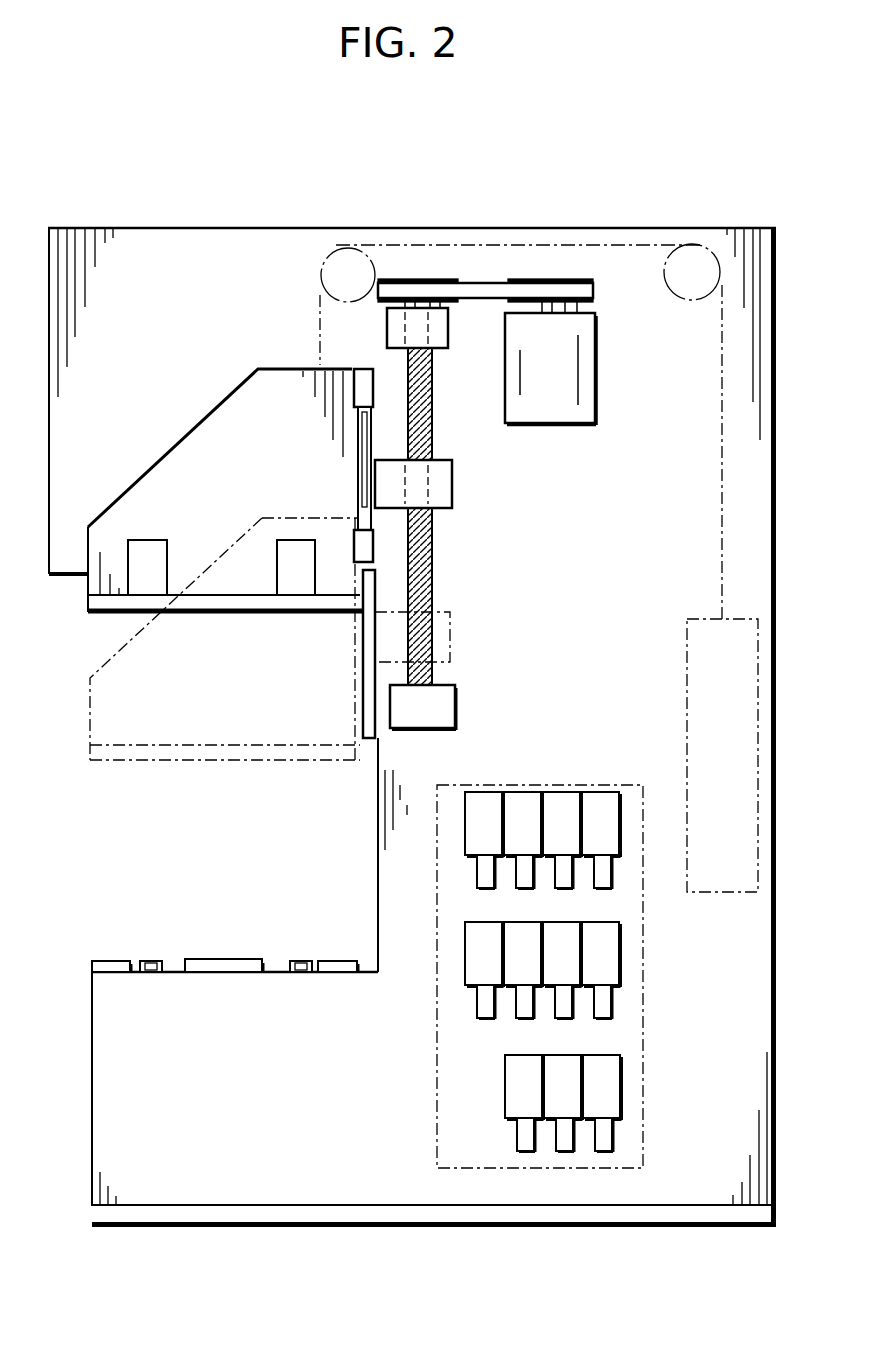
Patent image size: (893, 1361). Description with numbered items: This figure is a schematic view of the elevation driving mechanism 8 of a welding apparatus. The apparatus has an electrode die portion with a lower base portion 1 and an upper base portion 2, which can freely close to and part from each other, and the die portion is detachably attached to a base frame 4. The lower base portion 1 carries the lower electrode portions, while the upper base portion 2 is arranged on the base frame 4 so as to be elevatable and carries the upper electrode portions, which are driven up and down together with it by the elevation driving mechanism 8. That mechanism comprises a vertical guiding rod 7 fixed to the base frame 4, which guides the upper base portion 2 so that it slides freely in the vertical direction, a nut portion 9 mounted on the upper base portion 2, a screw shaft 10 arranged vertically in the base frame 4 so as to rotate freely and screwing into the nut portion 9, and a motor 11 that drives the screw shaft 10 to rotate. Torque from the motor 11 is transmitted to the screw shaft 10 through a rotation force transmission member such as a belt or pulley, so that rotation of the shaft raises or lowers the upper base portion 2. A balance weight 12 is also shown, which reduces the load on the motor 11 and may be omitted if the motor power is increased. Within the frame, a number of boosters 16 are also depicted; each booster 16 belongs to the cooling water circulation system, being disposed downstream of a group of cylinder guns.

The lower base portion 1 is at (218, 955).
The upper base portion 2 is at (170, 460).
The base frame 4 is at (410, 228).
The vertical guiding rod 7 is at (380, 583).
The elevation driving mechanism 8 is at (540, 462).
The nut portion 9 is at (440, 478).
The screw shaft 10 is at (432, 530).
The motor 11 is at (598, 371).
The balance weight 12 is at (685, 645).
The booster 16 is at (570, 805).